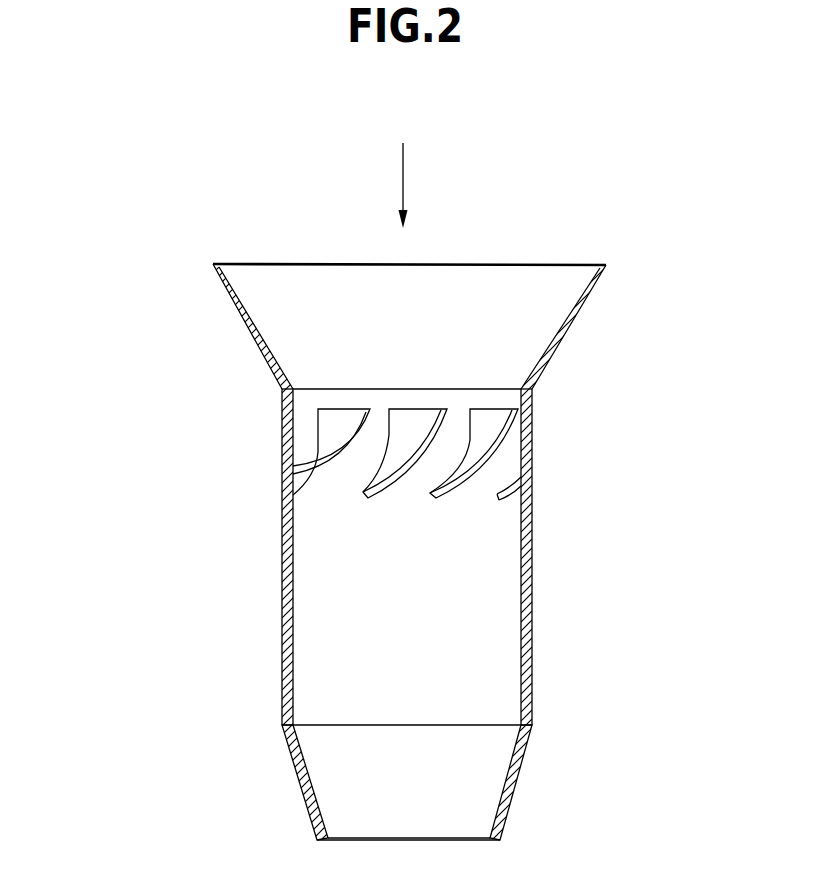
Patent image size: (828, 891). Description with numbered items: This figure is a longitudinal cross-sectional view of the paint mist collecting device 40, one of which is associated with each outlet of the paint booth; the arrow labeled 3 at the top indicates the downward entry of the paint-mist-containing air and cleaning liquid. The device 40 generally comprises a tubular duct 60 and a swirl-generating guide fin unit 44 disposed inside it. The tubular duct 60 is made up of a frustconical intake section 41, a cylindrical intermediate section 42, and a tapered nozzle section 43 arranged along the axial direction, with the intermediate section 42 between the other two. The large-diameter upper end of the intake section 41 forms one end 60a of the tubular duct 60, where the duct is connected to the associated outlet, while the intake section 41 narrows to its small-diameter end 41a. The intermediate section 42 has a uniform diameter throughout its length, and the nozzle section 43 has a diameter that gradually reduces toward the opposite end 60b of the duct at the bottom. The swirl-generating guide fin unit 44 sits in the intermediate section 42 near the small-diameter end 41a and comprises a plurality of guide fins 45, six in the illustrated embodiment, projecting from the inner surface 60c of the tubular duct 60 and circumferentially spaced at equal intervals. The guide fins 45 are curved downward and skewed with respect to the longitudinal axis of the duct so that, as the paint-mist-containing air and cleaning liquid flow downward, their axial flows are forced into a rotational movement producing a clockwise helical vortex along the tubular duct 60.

The flow direction 3 is at (406, 158).
The paint mist collecting device 40 is at (218, 688).
The frustconical intake section 41 is at (255, 341).
The small-diameter end of the frustconical intake section 41a is at (538, 377).
The cylindrical intermediate section 42 is at (282, 563).
The tapered nozzle section 43 is at (300, 785).
The swirl-generating guide fin unit 44 is at (448, 503).
The guide fins 45 is at (318, 455).
The tubular duct 60 is at (532, 597).
The one end of the tubular duct 60a is at (601, 266).
The opposite end of the tubular duct 60b is at (490, 840).
The inner surface of the tubular duct 60c is at (521, 633).